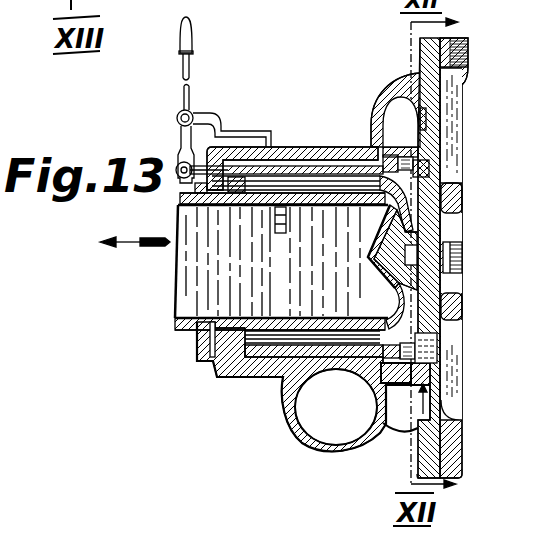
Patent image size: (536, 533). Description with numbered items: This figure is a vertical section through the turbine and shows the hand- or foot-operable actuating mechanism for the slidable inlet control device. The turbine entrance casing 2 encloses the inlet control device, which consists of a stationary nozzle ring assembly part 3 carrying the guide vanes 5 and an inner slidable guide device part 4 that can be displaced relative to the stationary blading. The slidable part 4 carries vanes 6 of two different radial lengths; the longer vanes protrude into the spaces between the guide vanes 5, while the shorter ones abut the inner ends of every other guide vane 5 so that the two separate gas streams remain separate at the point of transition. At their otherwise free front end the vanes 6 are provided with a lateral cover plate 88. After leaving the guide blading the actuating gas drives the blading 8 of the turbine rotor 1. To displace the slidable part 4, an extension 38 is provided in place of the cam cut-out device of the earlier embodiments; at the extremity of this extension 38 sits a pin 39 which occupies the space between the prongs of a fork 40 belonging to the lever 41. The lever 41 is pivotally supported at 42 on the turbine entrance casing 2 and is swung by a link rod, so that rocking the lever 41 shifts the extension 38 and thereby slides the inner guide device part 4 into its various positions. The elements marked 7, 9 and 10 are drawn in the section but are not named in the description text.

The turbine rotor 1 is at (437, 241).
The turbine entrance casing 2 is at (293, 408).
The inlet control device part 3 is at (383, 369).
The inlet control device part 4 is at (329, 167).
The guide vanes 5 is at (405, 383).
The vanes 6 is at (407, 316).
The flange channel 7 is at (487, 108).
The blading 8 is at (427, 178).
The lower tube 9 is at (289, 284).
The bore 10 is at (177, 318).
The extension 38 is at (276, 151).
The pin 39 is at (176, 170).
The fork 40 is at (182, 157).
The lever 41 is at (190, 103).
The pivot 42 is at (230, 131).
The lateral cover plate 88 is at (445, 351).